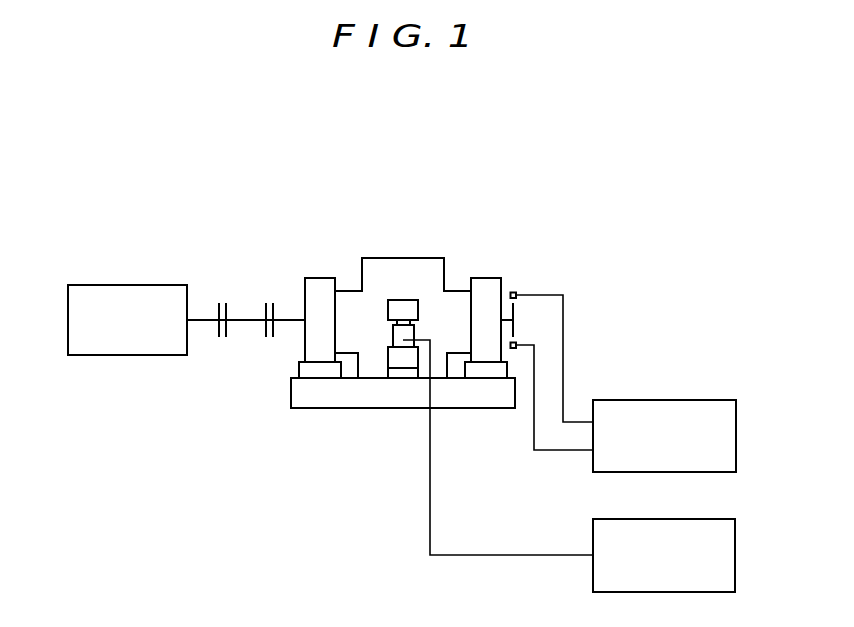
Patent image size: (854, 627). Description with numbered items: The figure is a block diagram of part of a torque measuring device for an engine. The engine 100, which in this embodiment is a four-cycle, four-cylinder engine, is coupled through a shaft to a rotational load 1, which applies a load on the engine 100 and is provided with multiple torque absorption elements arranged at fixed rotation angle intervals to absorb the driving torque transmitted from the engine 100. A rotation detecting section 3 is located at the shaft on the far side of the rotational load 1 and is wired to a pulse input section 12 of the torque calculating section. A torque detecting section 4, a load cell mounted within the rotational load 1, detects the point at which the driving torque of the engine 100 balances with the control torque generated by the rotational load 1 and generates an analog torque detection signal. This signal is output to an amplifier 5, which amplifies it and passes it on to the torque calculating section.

The engine 100 is at (127, 284).
The rotational load 1 is at (403, 252).
The rotation detecting section 3 is at (519, 281).
The torque detecting section 4 is at (396, 335).
The pulse input section 12 is at (736, 435).
The amplifier 5 is at (735, 553).